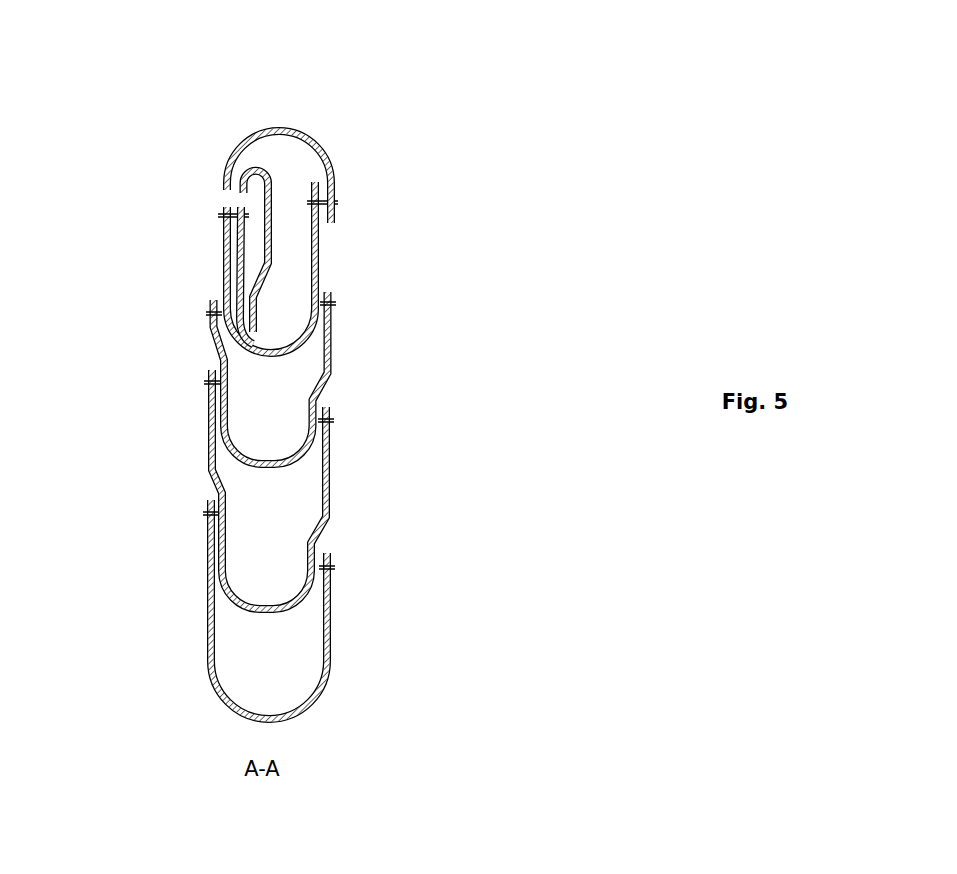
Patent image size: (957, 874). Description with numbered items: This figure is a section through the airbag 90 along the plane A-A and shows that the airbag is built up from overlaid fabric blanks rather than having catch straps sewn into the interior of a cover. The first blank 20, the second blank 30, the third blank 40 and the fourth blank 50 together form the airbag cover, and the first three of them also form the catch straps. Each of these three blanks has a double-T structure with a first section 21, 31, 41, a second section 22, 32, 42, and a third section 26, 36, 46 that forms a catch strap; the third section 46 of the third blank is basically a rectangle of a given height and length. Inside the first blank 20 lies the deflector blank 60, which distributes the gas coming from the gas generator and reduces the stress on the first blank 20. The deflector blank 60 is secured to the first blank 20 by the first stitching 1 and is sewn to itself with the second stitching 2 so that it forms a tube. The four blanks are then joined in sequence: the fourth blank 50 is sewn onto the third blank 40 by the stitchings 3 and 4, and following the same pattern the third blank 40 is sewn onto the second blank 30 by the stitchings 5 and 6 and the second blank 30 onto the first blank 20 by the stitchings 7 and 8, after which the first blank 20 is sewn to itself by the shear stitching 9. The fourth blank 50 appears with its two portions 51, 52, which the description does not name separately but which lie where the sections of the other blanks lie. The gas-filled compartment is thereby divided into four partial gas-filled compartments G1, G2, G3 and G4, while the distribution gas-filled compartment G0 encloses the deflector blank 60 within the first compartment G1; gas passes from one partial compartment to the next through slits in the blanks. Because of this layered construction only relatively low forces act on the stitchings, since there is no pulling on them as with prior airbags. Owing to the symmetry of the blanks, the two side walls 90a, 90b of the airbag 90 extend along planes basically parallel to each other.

The distribution gas-filled compartment G0 is at (251, 186).
The first stitching 1 is at (225, 185).
The deflector blank 60 is at (272, 246).
The first blank 20 is at (323, 153).
The second section of the first blank 22 is at (337, 231).
The first partial gas-filled compartment G1 is at (300, 175).
The shear stitching 9 is at (312, 182).
The third section of the first blank 26 is at (280, 360).
The first section of the first blank 21 is at (210, 242).
The second stitching 2 is at (262, 330).
The stitching 7 is at (213, 312).
The stitching 8 is at (326, 302).
The first section of the second blank 31 is at (193, 337).
The second section of the second blank 32 is at (349, 376).
The second blank 30 is at (347, 375).
The second partial gas-filled compartment G2 is at (293, 387).
The third section of the second blank 36 is at (290, 476).
The stitching 5 is at (194, 374).
The first section of the third blank 41 is at (196, 436).
The stitching 6 is at (331, 430).
The second section of the third blank 42 is at (345, 499).
The third blank 40 is at (332, 510).
The second side wall 90b is at (337, 542).
The third section of the third blank 46 is at (268, 617).
The third partial gas-filled compartment G3 is at (252, 498).
The stitching 3 is at (210, 508).
The first side wall 90a is at (192, 550).
The outer cup side wall 51 is at (189, 657).
The outer cup right wall 52 is at (346, 666).
The stitching 4 is at (330, 573).
The fourth blank 50 is at (313, 700).
The fourth partial gas-filled compartment G4 is at (270, 668).
The airbag 90 is at (174, 745).